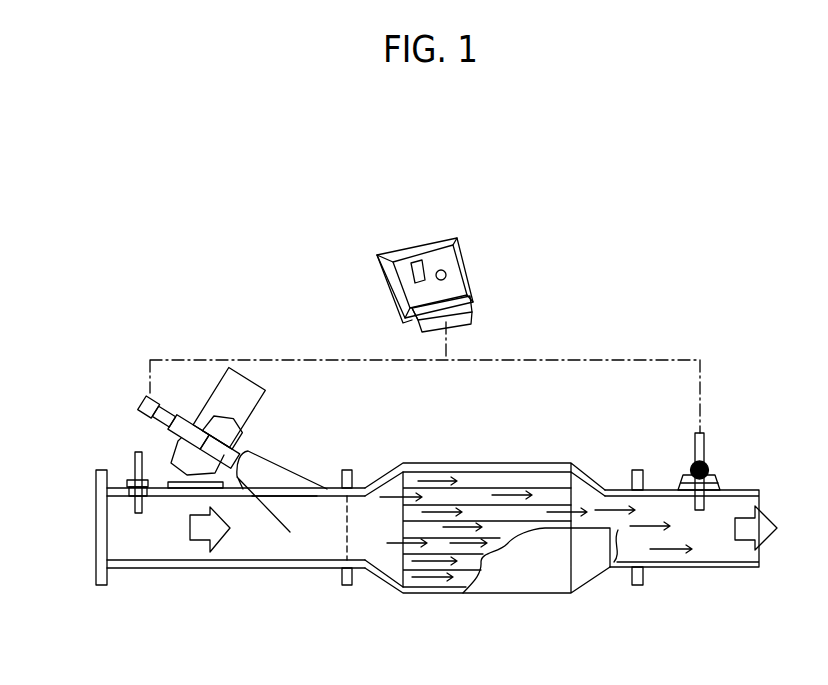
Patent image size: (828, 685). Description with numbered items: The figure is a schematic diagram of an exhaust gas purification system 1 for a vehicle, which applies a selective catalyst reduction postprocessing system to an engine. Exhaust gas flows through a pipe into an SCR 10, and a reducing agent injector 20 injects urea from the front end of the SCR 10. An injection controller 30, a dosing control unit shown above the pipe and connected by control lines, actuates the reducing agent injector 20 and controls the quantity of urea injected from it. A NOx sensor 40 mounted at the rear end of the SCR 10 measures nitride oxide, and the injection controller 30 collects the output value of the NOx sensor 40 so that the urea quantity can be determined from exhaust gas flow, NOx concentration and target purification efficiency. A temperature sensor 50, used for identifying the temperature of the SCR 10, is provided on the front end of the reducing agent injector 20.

The exhaust gas purification system 1 is at (261, 228).
The SCR 10 is at (512, 477).
The reducing agent injector 20 is at (158, 416).
The injection controller 30 is at (448, 255).
The NOx sensor 40 is at (706, 465).
The temperature sensor 50 is at (128, 480).